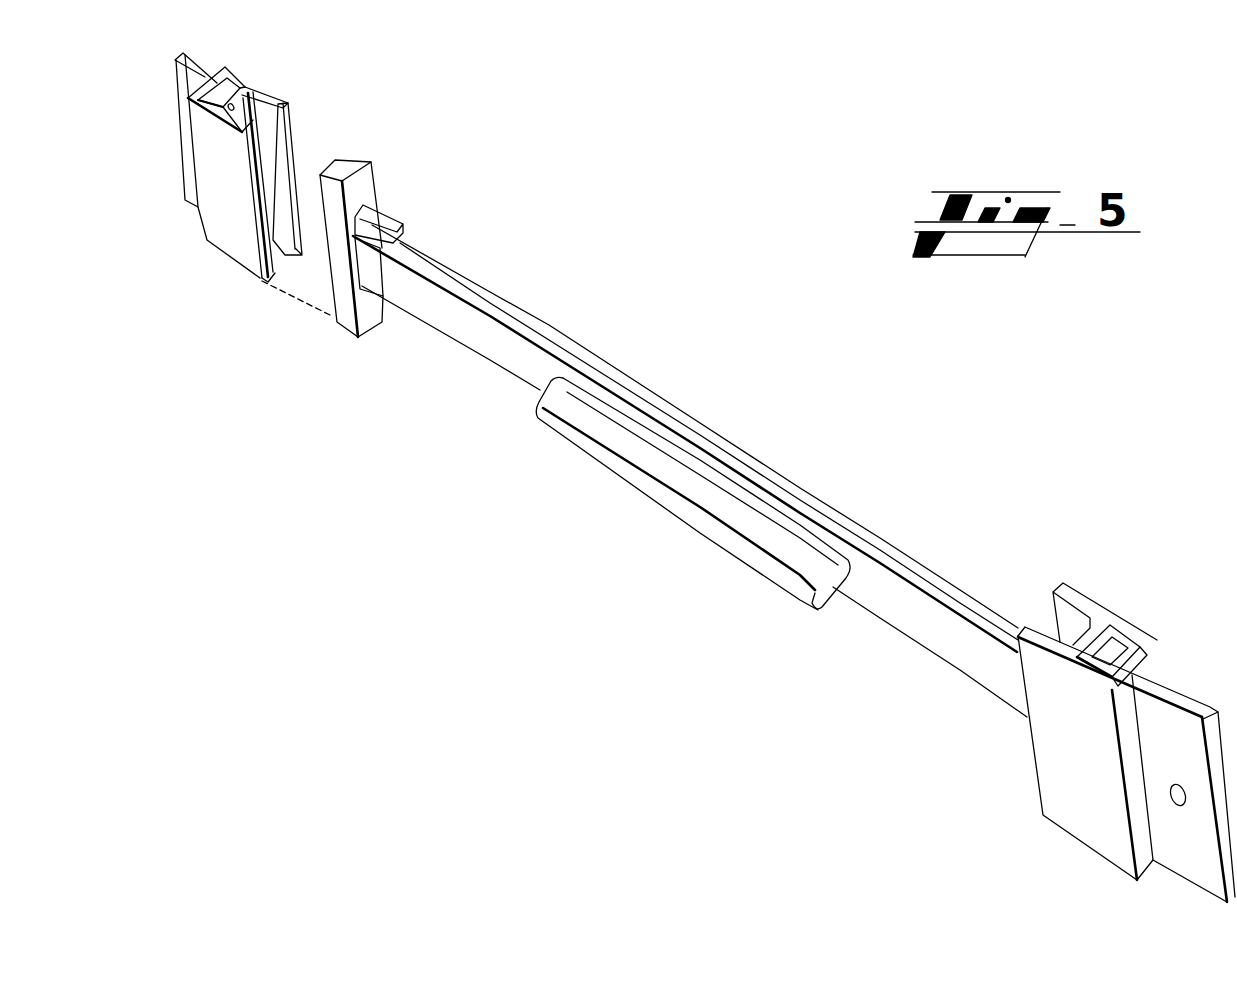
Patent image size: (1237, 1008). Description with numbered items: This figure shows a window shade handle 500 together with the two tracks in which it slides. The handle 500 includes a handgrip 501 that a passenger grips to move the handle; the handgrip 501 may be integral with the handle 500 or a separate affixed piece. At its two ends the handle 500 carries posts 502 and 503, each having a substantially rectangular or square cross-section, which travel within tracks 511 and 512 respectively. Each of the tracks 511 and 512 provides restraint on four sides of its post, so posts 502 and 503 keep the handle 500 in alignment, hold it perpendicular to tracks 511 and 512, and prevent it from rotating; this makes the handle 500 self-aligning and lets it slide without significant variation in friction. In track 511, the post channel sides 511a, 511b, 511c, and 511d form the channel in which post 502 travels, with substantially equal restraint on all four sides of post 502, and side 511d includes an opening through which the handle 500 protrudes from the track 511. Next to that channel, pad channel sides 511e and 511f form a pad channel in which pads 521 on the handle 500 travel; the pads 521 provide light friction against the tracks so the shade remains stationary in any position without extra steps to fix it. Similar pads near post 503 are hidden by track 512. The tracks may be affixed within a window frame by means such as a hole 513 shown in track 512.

The handle 500 is at (918, 647).
The handgrip 501 is at (667, 512).
The post 502 is at (350, 328).
The post 503 is at (1125, 637).
The track 511 is at (220, 250).
The post channel side 511a is at (197, 102).
The post channel side 511b is at (192, 80).
The post channel side 511c is at (243, 85).
The post channel side 511d is at (243, 92).
The pad channel side 511e is at (252, 175).
The pad channel side 511f is at (278, 160).
The track 512 is at (1150, 662).
The hole 513 is at (1185, 797).
The pads 521 is at (397, 225).